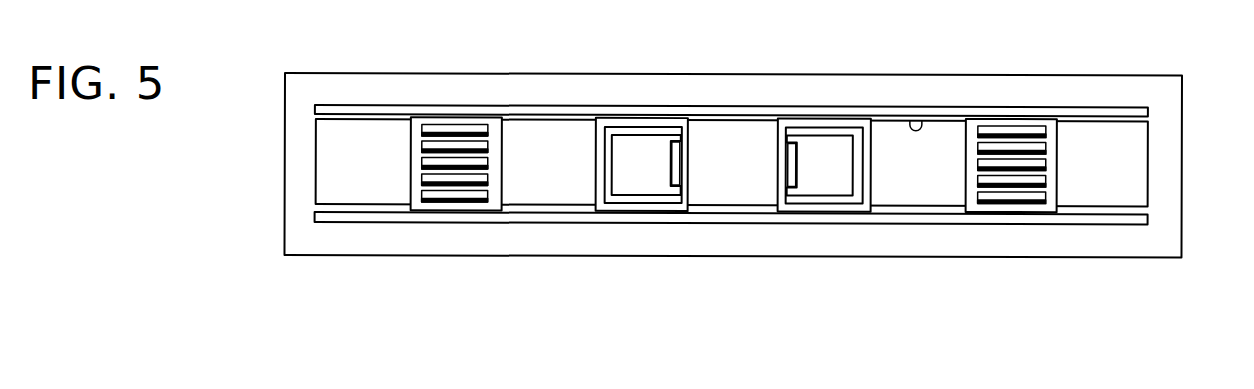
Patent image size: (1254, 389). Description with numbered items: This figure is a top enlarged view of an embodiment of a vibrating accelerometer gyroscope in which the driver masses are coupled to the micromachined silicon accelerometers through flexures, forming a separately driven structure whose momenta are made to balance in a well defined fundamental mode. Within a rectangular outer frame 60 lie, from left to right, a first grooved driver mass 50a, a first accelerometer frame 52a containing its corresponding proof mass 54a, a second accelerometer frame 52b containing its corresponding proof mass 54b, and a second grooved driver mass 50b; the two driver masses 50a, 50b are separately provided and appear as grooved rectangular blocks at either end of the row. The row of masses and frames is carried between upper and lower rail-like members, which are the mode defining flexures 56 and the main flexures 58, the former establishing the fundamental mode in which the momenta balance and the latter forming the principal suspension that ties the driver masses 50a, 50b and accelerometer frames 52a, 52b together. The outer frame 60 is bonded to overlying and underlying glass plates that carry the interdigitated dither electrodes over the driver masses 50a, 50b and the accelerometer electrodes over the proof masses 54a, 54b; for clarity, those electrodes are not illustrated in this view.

The first grooved driver mass 50a is at (450, 120).
The second grooved driver mass 50b is at (1025, 120).
The first accelerometer frame 52a is at (637, 118).
The second accelerometer frame 52b is at (802, 120).
The first proof mass 54a is at (660, 146).
The second proof mass 54b is at (835, 148).
The mode defining flexures 56 is at (364, 218).
The main flexures 58 is at (925, 207).
The outer frame 60 is at (1169, 238).